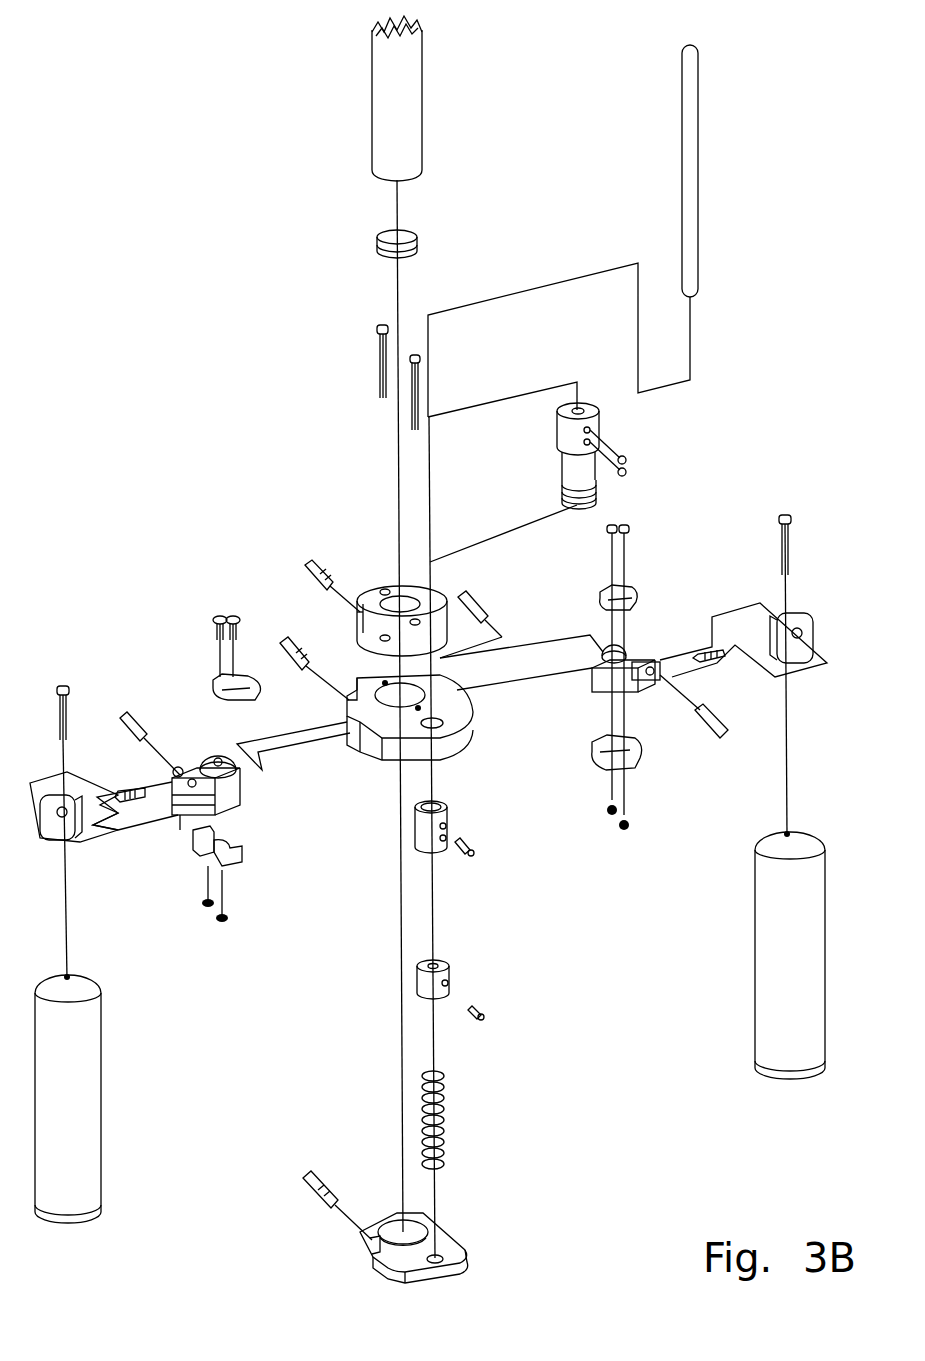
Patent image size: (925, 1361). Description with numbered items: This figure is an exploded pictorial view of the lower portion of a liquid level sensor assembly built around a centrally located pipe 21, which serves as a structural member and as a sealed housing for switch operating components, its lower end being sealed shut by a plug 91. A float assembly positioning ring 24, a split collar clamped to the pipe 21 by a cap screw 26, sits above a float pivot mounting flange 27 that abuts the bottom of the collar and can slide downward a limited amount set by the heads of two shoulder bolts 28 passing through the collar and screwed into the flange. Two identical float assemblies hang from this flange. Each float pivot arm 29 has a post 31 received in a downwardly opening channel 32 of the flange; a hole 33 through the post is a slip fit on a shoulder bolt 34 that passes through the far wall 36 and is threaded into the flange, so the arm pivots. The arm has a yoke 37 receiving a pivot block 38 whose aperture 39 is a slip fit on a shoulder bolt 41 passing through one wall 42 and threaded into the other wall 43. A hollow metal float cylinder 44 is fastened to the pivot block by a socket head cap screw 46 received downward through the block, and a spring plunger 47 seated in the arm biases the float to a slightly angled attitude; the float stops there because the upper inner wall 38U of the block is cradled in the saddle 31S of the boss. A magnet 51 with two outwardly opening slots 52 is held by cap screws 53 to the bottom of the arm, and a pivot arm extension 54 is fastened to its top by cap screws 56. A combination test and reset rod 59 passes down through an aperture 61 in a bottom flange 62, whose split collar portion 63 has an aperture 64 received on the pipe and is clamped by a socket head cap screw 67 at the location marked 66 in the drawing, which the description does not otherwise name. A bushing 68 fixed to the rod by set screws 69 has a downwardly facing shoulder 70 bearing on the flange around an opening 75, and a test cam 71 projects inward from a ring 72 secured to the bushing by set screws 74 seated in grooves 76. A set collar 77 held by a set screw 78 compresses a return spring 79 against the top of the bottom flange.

The pipe 21 is at (380, 65).
The float assembly positioning ring 24 is at (355, 542).
The cap screw 26 is at (305, 563).
The float pivot mounting flange 27 is at (377, 760).
The shoulder bolts 28 is at (378, 328).
The float pivot arm 29 is at (232, 802).
The post 31 is at (210, 745).
The saddle 31S is at (212, 755).
The downwardly opening channel 32 is at (415, 764).
The hole 33 is at (224, 766).
The shoulder bolt 34 is at (283, 640).
The far wall 36 is at (347, 698).
The yoke 37 is at (179, 800).
The pivot block 38 is at (55, 832).
The upper inner wall 38U is at (92, 770).
The aperture 39 is at (64, 816).
The shoulder bolt 41 is at (137, 724).
The wall 42 is at (186, 782).
The wall 43 is at (224, 812).
The float cylinder 44 is at (82, 1090).
The socket head cap screw 46 is at (62, 684).
The spring plunger 47 is at (133, 805).
The magnet 51 is at (230, 862).
The slots 52 is at (198, 843).
The cap screws 53 is at (222, 922).
The pivot arm extension 54 is at (256, 702).
The cap screws 56 is at (222, 616).
The test and reset rod 59 is at (697, 150).
The aperture 61 is at (408, 1193).
The bottom flange 62 is at (485, 1286).
The split collar portion 63 is at (396, 1232).
The aperture 64 is at (359, 1156).
The hole 66 is at (372, 1245).
The socket head cap screw 67 is at (303, 1178).
The bushing 68 is at (567, 380).
The set screws 69 is at (628, 462).
The shoulder 70 is at (562, 468).
The test cam 71 is at (421, 800).
The ring 72 is at (475, 800).
The set screws 74 is at (468, 857).
The opening 75 is at (443, 723).
The grooves 76 is at (597, 497).
The set collar 77 is at (452, 973).
The set screw 78 is at (483, 1020).
The return spring 79 is at (445, 1117).
The plug 91 is at (453, 209).